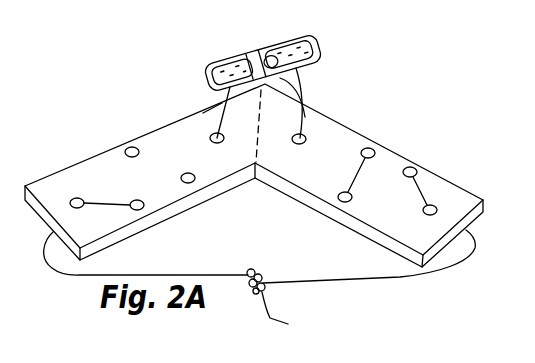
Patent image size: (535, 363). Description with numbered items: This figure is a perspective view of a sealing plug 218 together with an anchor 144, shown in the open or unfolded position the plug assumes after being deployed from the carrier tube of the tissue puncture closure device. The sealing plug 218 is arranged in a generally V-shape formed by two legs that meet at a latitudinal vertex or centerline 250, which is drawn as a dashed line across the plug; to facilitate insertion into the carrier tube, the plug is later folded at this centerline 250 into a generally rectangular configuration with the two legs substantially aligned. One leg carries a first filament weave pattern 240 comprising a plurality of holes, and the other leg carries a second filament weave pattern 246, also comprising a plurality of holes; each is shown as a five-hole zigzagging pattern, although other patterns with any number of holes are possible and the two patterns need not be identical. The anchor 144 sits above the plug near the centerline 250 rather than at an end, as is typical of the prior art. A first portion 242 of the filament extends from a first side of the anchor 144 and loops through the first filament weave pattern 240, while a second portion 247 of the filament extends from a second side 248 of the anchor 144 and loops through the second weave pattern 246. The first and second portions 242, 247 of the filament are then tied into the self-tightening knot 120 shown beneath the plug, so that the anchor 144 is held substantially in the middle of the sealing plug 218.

The self-tightening knot 120 is at (270, 296).
The connector 144 is at (319, 50).
The sealing plug 218 is at (302, 84).
The first filament weave pattern 240 is at (394, 89).
The first portion of the filament 242 is at (304, 109).
The second filament weave pattern 246 is at (127, 147).
The second portion of the filament 247 is at (203, 113).
The second side of the anchor 248 is at (210, 88).
The centerline 250 is at (266, 138).